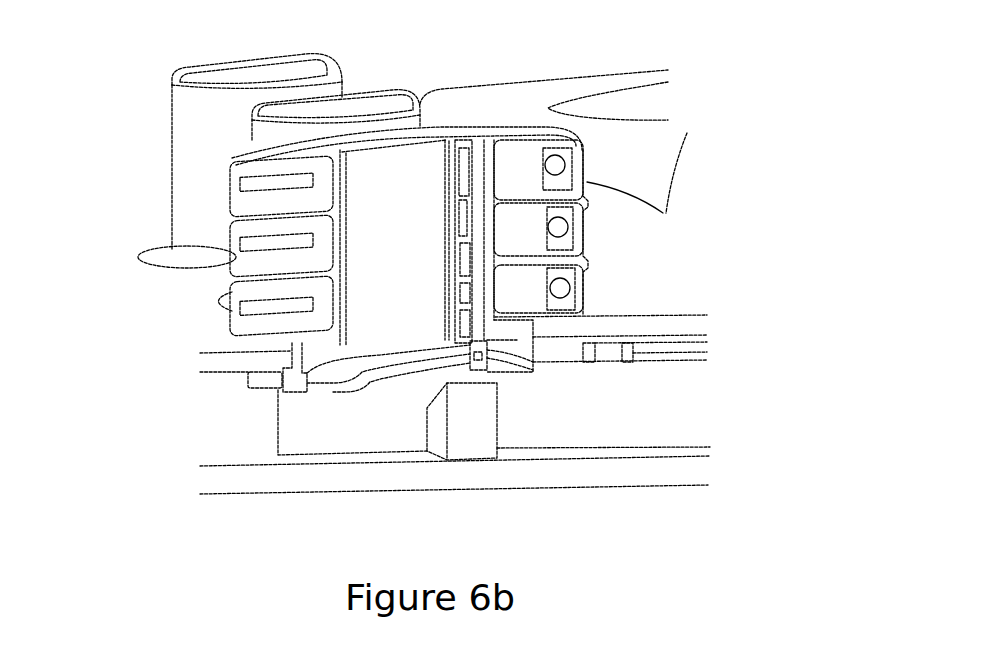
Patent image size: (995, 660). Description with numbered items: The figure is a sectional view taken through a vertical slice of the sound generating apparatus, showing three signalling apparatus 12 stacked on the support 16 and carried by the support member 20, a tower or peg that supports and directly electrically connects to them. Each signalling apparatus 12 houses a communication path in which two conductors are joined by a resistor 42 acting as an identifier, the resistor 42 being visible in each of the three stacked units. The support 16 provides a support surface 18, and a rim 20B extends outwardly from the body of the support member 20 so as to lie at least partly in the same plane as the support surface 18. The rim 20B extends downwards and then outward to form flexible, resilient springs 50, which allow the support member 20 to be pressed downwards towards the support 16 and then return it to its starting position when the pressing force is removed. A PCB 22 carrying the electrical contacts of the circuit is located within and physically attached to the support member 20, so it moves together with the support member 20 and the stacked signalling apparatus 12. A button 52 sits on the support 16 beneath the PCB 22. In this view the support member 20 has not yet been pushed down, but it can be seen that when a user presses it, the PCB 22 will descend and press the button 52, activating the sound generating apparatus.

The signalling apparatus 12 is at (237, 323).
The support member 20 is at (357, 175).
The rim 20B is at (302, 343).
The support surface 18 is at (224, 362).
The springs 50 is at (256, 382).
The support 16 is at (562, 432).
The PCB 22 is at (480, 312).
The button 52 is at (487, 363).
The resistor 42 is at (556, 165).